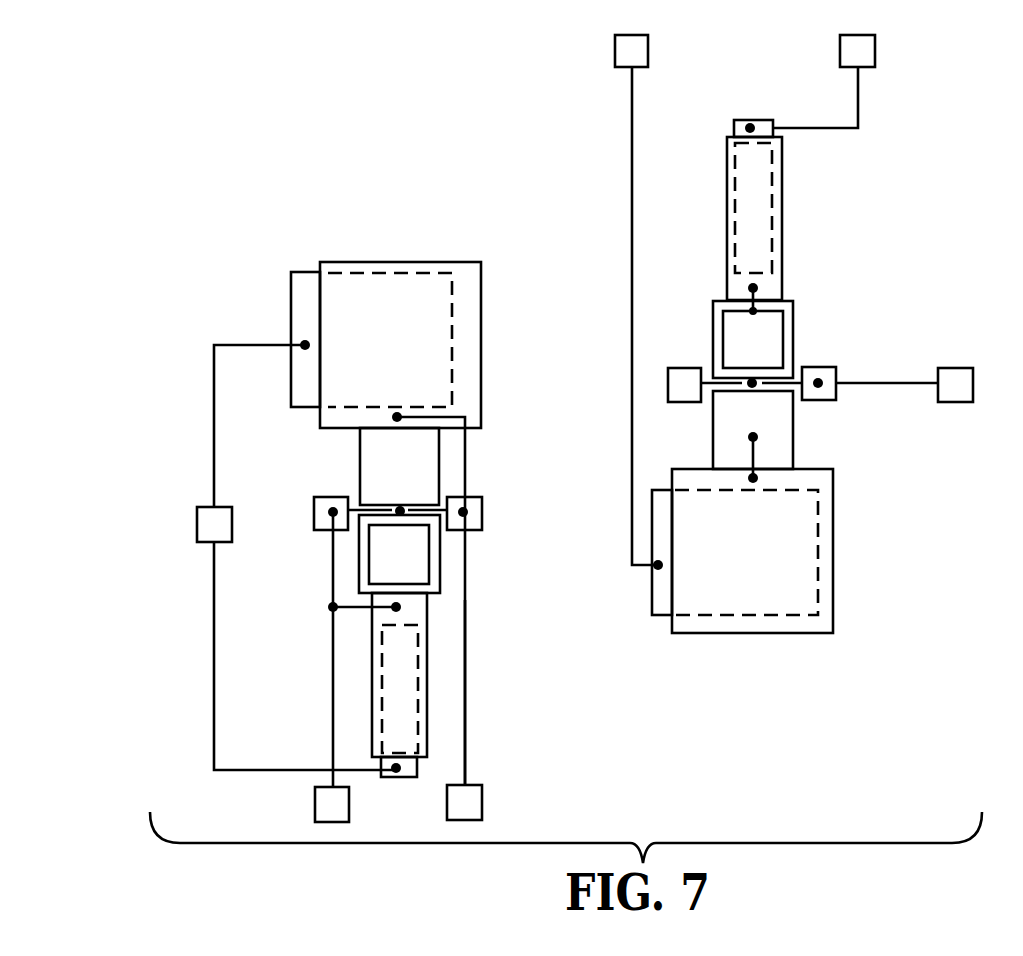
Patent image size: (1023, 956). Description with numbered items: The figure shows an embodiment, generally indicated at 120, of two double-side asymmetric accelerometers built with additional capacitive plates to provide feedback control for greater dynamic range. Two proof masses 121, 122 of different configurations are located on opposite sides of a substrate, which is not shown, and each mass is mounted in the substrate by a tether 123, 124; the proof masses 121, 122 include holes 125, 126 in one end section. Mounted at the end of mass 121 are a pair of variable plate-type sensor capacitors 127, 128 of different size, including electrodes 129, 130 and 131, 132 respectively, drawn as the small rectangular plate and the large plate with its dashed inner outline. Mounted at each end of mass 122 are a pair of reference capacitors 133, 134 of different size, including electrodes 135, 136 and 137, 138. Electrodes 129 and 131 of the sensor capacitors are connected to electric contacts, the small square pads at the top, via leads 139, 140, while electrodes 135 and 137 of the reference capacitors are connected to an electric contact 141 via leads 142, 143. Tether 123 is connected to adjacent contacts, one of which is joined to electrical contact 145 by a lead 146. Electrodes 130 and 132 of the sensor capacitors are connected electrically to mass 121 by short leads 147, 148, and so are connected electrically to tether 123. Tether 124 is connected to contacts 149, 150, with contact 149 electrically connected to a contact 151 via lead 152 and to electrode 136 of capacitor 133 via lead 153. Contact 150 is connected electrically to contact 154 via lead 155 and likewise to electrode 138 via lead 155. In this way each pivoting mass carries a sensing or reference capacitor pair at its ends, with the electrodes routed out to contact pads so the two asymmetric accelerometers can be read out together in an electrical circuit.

The double-side asymmetric accelerometer embodiment 120 is at (528, 105).
The proof mass 121 is at (818, 422).
The proof mass 122 is at (350, 470).
The tether 123 is at (738, 395).
The tether 124 is at (403, 492).
The hole 125 is at (773, 333).
The hole 126 is at (388, 559).
The variable plate-type sensor capacitor 127 is at (800, 192).
The variable plate-type sensor capacitor 128 is at (858, 540).
The electrode 129 is at (750, 120).
The electrode 130 is at (727, 150).
The electrode 131 is at (655, 615).
The electrode 132 is at (835, 603).
The reference capacitor 133 is at (312, 243).
The reference capacitor 134 is at (402, 782).
The electrode 135 is at (291, 305).
The electrode 136 is at (415, 262).
The electrode / electric contact 137 is at (418, 770).
The electrode / electric contact 138 is at (427, 688).
The lead 139 is at (860, 100).
The lead 140 is at (632, 185).
The electric contact 141 is at (232, 535).
The lead 142 is at (214, 440).
The lead / contact 143 is at (214, 678).
The electrical contact 145 is at (958, 402).
The lead 146 is at (905, 383).
The lead 147 is at (750, 290).
The lead 148 is at (758, 459).
The contact 149 is at (482, 520).
The contact 150 is at (314, 505).
The contact 151 is at (484, 800).
The lead 152 is at (466, 625).
The lead 153 is at (466, 470).
The contact 154 is at (315, 805).
The lead 155 is at (362, 605).